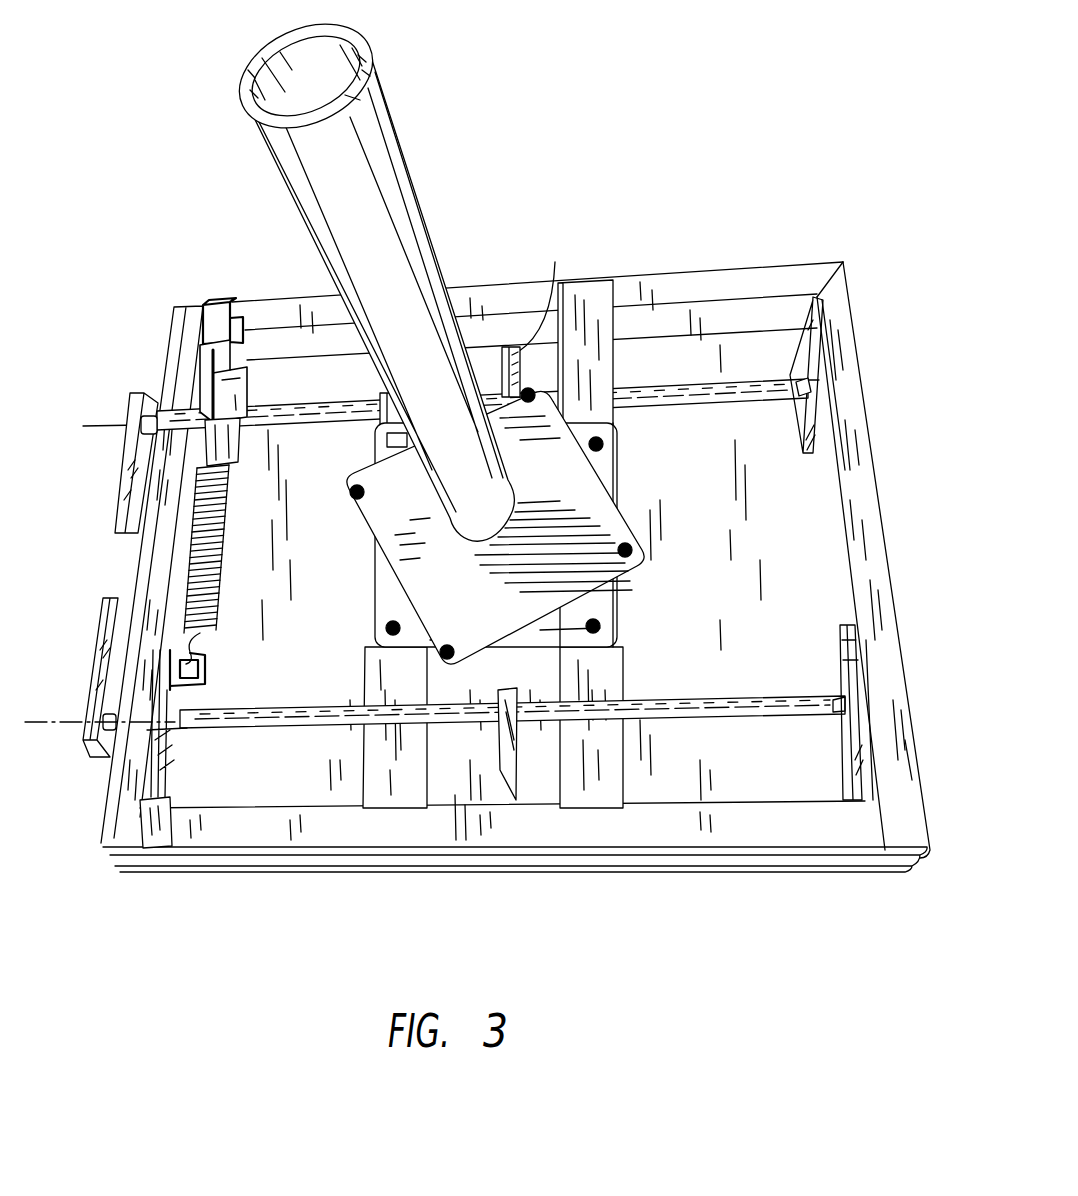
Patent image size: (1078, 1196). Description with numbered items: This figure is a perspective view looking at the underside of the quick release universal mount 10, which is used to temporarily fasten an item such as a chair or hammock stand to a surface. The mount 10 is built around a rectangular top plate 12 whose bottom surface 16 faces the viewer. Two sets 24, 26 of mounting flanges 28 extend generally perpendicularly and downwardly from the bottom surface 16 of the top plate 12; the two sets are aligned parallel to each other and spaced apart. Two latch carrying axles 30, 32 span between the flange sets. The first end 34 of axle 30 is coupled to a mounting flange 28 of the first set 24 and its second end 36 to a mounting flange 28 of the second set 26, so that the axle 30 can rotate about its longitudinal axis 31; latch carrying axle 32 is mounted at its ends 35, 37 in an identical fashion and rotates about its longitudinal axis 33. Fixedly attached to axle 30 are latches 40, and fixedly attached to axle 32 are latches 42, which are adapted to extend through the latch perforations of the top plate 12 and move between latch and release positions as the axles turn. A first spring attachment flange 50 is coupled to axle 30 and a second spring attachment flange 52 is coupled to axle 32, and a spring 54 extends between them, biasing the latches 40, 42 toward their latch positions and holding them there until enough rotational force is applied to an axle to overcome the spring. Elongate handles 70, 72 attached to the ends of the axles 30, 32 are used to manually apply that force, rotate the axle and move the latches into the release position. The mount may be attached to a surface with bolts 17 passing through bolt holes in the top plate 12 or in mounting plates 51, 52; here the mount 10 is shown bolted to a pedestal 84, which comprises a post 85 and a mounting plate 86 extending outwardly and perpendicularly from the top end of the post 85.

The quick release universal mount 10 is at (697, 230).
The top plate 12 is at (803, 467).
The bottom surface 16 is at (761, 594).
The bolts 17 is at (604, 443).
The first set of mounting flanges 24 is at (163, 300).
The second set of mounting flanges 26 is at (867, 297).
The mounting flange 28 is at (865, 493).
The latch carrying axle 30 is at (254, 312).
The longitudinal axis 31 is at (900, 380).
The latch carrying axle 32 is at (241, 722).
The longitudinal axis 33 is at (938, 703).
The first end 34 is at (205, 367).
The first end 35 is at (180, 716).
The second end 36 is at (803, 380).
The second end 37 is at (840, 705).
The latch 40 is at (518, 348).
The latch 42 is at (173, 782).
The first spring attachment flange 50 is at (213, 428).
The mounting plate 51 is at (373, 830).
The second spring attachment flange 52 is at (600, 288).
The spring 54 is at (190, 552).
The elongate handle 70 is at (137, 407).
The elongate handle 72 is at (102, 612).
The pedestal 84 is at (369, 271).
The post 85 is at (378, 103).
The mounting plate 86 is at (613, 470).